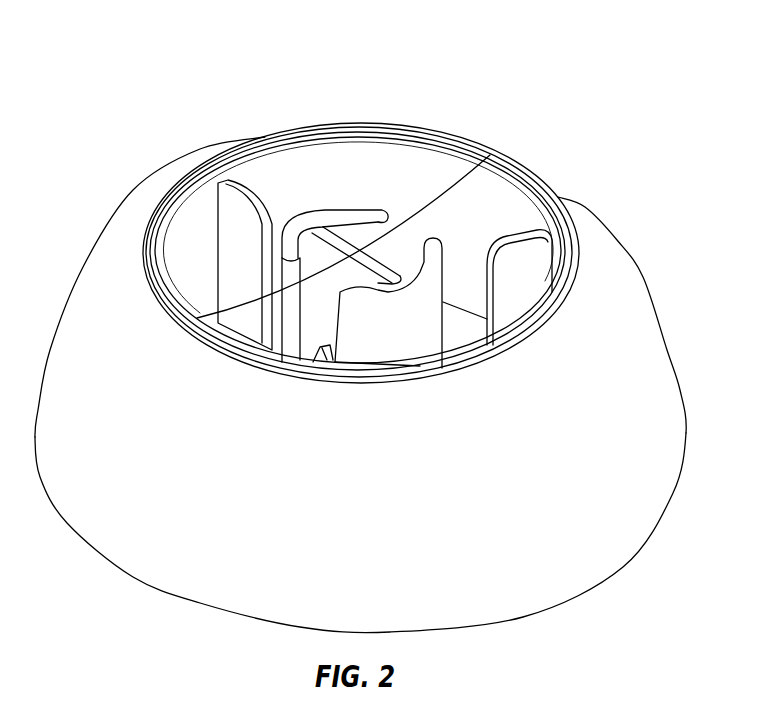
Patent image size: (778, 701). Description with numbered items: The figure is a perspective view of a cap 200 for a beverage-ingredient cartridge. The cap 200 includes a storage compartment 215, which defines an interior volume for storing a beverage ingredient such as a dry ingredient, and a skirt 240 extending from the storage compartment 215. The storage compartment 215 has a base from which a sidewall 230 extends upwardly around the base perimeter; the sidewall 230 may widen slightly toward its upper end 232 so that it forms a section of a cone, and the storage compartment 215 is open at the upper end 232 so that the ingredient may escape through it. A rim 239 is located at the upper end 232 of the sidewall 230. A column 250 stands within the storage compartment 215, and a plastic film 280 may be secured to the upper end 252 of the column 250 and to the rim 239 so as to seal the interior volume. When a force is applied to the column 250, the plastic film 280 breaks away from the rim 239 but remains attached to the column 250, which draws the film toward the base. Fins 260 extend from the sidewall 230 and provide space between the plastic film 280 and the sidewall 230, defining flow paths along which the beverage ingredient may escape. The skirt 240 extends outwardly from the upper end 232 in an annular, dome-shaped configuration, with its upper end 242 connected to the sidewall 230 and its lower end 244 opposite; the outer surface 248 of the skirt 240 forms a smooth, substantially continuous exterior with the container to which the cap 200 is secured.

The cap 200 is at (76, 114).
The storage compartment 215 is at (468, 203).
The sidewall 230 is at (517, 217).
The upper end 232 is at (528, 187).
The rim 239 is at (533, 315).
The skirt 240 is at (617, 240).
The upper end 242 is at (580, 260).
The lower end 244 is at (663, 513).
The outer surface 248 is at (383, 453).
The column 250 is at (370, 280).
The upper end 252 is at (383, 265).
The fins 260 is at (525, 257).
The plastic film 280 is at (282, 163).